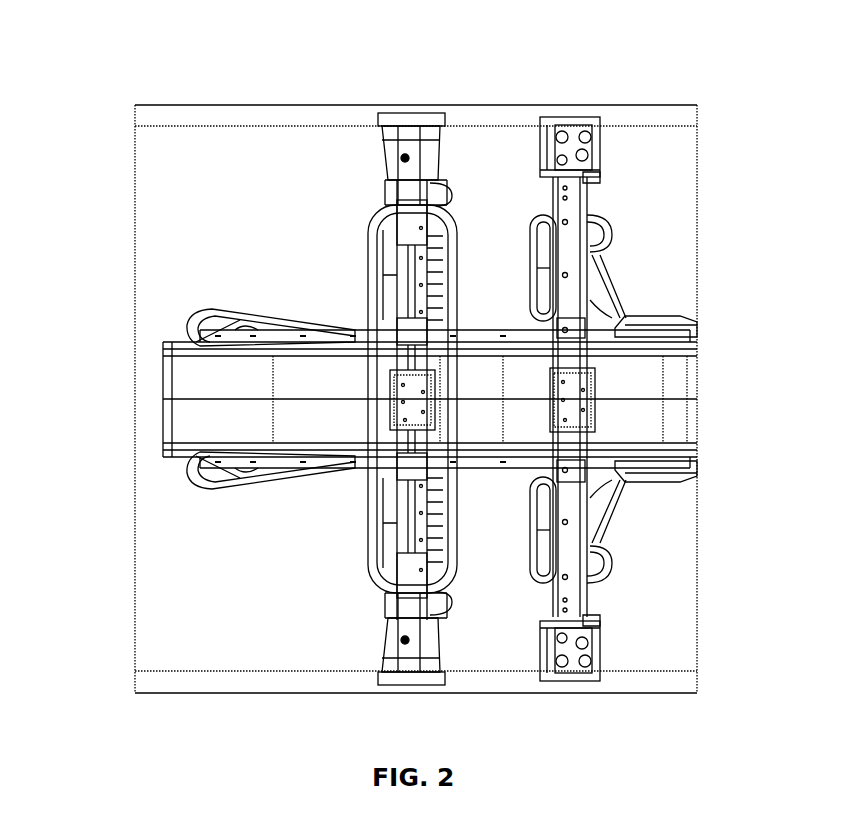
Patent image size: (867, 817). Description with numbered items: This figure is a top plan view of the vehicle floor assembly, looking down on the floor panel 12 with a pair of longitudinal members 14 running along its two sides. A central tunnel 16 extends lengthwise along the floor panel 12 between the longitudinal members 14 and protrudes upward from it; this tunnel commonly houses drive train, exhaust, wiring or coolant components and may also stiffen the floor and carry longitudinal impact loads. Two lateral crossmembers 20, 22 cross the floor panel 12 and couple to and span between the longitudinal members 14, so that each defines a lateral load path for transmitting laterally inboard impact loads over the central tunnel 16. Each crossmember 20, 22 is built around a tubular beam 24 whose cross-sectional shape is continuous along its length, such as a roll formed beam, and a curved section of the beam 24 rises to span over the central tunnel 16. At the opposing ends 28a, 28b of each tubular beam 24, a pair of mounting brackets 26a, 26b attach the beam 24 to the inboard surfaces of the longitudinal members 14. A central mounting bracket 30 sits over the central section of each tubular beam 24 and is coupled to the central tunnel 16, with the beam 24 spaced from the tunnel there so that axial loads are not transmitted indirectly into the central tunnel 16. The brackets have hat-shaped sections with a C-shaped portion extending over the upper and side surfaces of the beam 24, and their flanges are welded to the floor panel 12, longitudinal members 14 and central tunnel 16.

The floor panel 12 is at (690, 220).
The longitudinal members 14 is at (672, 120).
The central tunnel 16 is at (175, 384).
The crossmember 20 is at (394, 258).
The crossmember 22 is at (578, 230).
The tubular beam 24 is at (405, 538).
The mounting bracket 26a is at (388, 116).
The mounting bracket 26b is at (388, 662).
The end of tubular beam 28a is at (392, 184).
The end of tubular beam 28b is at (393, 617).
The central mounting bracket 30 is at (575, 380).